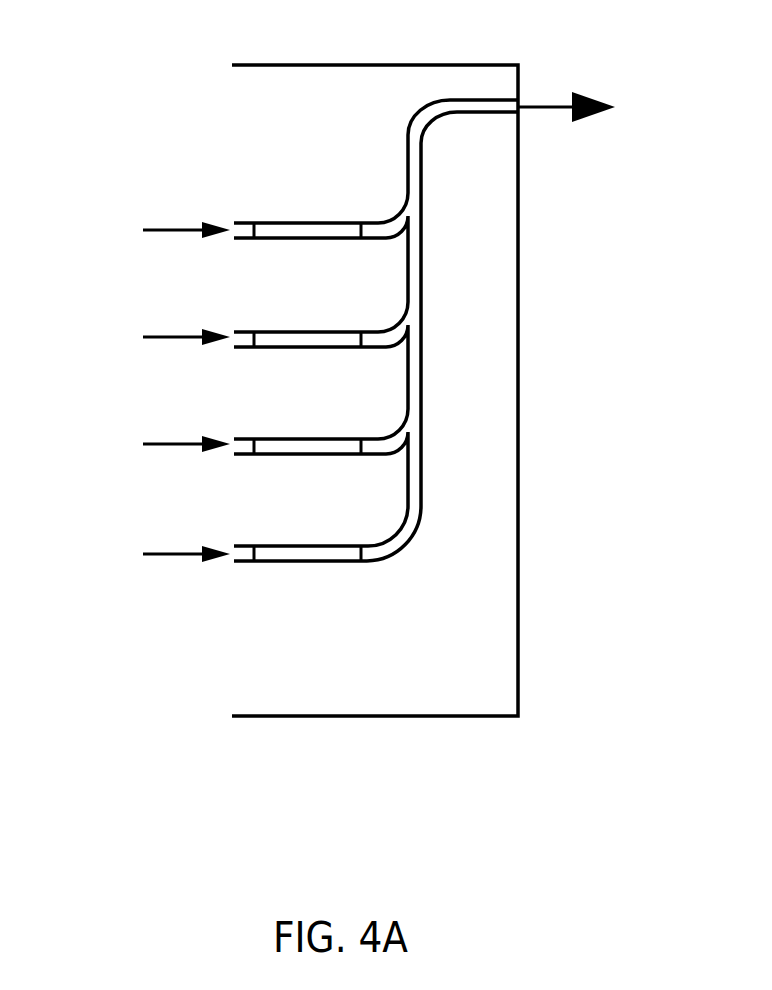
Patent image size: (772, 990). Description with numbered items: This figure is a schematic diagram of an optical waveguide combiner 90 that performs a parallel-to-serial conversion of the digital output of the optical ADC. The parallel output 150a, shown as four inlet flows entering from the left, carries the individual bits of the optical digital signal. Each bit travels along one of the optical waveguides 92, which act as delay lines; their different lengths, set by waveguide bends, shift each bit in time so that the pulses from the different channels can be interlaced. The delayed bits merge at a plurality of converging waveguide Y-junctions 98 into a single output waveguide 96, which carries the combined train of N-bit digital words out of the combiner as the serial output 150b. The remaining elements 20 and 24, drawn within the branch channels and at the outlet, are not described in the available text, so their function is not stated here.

The outlet channel 20 is at (517, 115).
The flow insert 24 is at (303, 220).
The optical waveguide combiner 90 is at (408, 545).
The optical waveguides 92 is at (423, 467).
The single output waveguide 96 is at (413, 122).
The converging waveguide Y-junctions 98 is at (415, 313).
The parallel output 150a is at (150, 553).
The serial output 150b is at (550, 107).